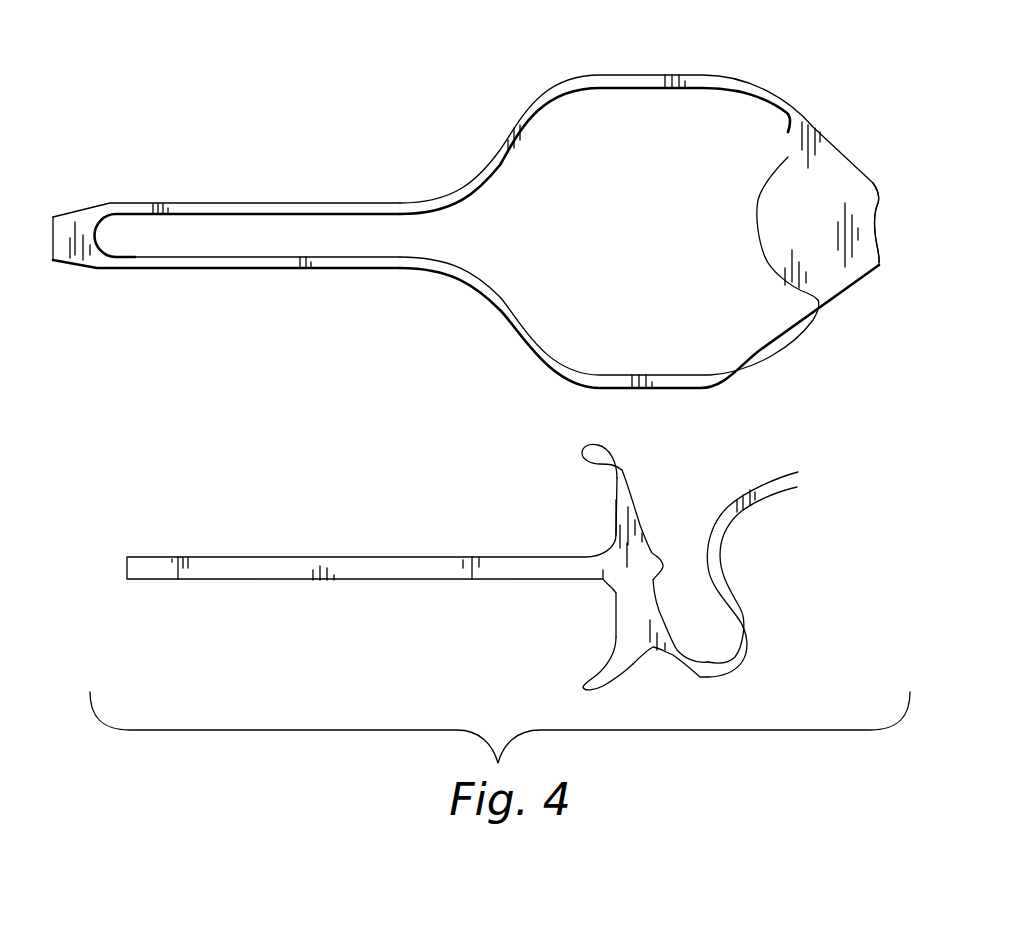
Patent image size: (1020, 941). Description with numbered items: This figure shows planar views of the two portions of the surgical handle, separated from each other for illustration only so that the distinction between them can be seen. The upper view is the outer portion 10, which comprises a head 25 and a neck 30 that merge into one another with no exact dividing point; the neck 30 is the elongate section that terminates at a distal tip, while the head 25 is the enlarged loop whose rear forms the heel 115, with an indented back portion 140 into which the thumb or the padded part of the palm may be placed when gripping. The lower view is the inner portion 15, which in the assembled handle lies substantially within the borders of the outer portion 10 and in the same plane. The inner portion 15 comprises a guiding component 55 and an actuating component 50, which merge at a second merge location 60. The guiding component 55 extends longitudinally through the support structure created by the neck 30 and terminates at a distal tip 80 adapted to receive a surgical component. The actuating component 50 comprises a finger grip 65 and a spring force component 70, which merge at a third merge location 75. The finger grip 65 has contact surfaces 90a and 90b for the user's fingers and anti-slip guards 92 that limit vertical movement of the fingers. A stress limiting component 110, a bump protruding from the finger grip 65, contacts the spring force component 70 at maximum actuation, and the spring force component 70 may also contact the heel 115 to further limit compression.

The outer portion 10 is at (457, 172).
The neck 30 is at (60, 163).
The head 25 is at (805, 78).
The indented back portion 140 is at (878, 218).
The heel 115 is at (845, 267).
The inner portion 15 is at (419, 541).
The guiding component 55 is at (283, 557).
The distal tip 80 is at (132, 570).
The finger grip 65 is at (630, 467).
The anti-slip guards 92 is at (600, 446).
The contact surface 90a is at (616, 507).
The contact surface 90b is at (612, 640).
The second merge location 60 is at (603, 579).
The stress limiting component 110 is at (660, 569).
The third merge location 75 is at (668, 648).
The actuating component 50 is at (688, 522).
The spring force component 70 is at (740, 603).